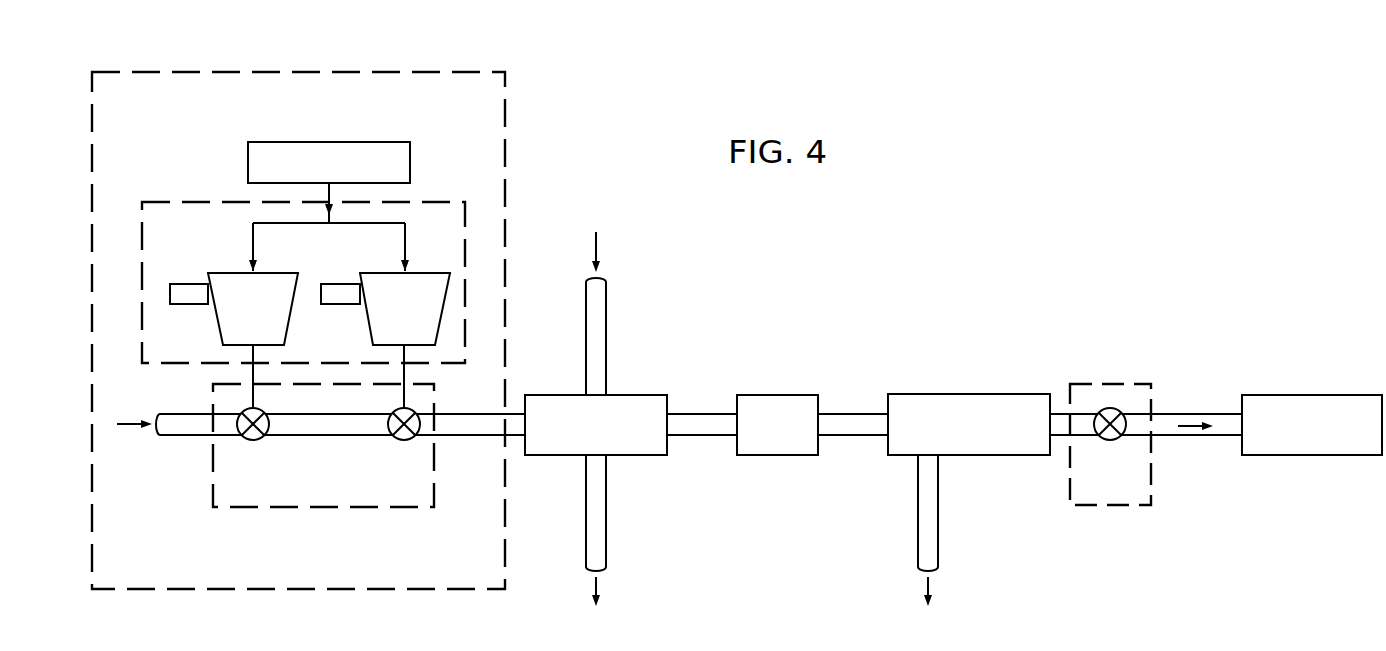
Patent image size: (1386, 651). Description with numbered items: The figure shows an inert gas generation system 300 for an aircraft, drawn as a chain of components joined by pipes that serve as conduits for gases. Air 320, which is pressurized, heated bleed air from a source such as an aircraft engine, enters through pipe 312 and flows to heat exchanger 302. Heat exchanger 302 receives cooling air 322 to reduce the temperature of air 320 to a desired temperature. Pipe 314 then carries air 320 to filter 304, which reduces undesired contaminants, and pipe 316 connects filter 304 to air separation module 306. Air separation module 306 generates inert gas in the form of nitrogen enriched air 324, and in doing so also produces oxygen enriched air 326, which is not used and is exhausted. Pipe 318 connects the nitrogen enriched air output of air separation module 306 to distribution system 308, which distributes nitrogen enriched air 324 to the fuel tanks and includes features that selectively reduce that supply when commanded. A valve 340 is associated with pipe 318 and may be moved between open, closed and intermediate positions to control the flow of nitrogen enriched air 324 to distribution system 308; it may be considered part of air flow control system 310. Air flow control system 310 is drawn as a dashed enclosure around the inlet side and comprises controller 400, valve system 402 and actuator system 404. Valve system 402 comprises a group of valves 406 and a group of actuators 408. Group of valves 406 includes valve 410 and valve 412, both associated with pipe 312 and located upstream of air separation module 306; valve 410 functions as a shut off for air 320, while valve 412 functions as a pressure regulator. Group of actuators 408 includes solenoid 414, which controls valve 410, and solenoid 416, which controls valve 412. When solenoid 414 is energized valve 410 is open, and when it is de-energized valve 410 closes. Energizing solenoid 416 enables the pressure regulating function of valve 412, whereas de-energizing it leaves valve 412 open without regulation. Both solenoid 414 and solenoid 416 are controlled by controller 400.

The inert gas generation system 300 is at (1150, 175).
The heat exchanger 302 is at (566, 456).
The filter 304 is at (776, 456).
The air separation module 306 is at (968, 456).
The distribution system 308 is at (1311, 456).
The air flow control system 310 is at (248, 62).
The pipe 312 is at (479, 436).
The pipe 314 is at (706, 436).
The pipe 316 is at (850, 436).
The pipe 318 is at (1205, 436).
The air 320 is at (119, 425).
The cooling air 322 is at (594, 248).
The nitrogen enriched air 324 is at (1193, 417).
The oxygen enriched air 326 is at (931, 590).
The valve 340 is at (1112, 441).
The controller 400 is at (297, 141).
The valve system 402 is at (173, 164).
The actuator system 404 is at (218, 328).
The group of valves 406 is at (323, 478).
The group of actuators 408 is at (305, 274).
The valve 410 is at (253, 440).
The valve 412 is at (404, 440).
The solenoid 414 is at (190, 282).
The solenoid 416 is at (341, 282).